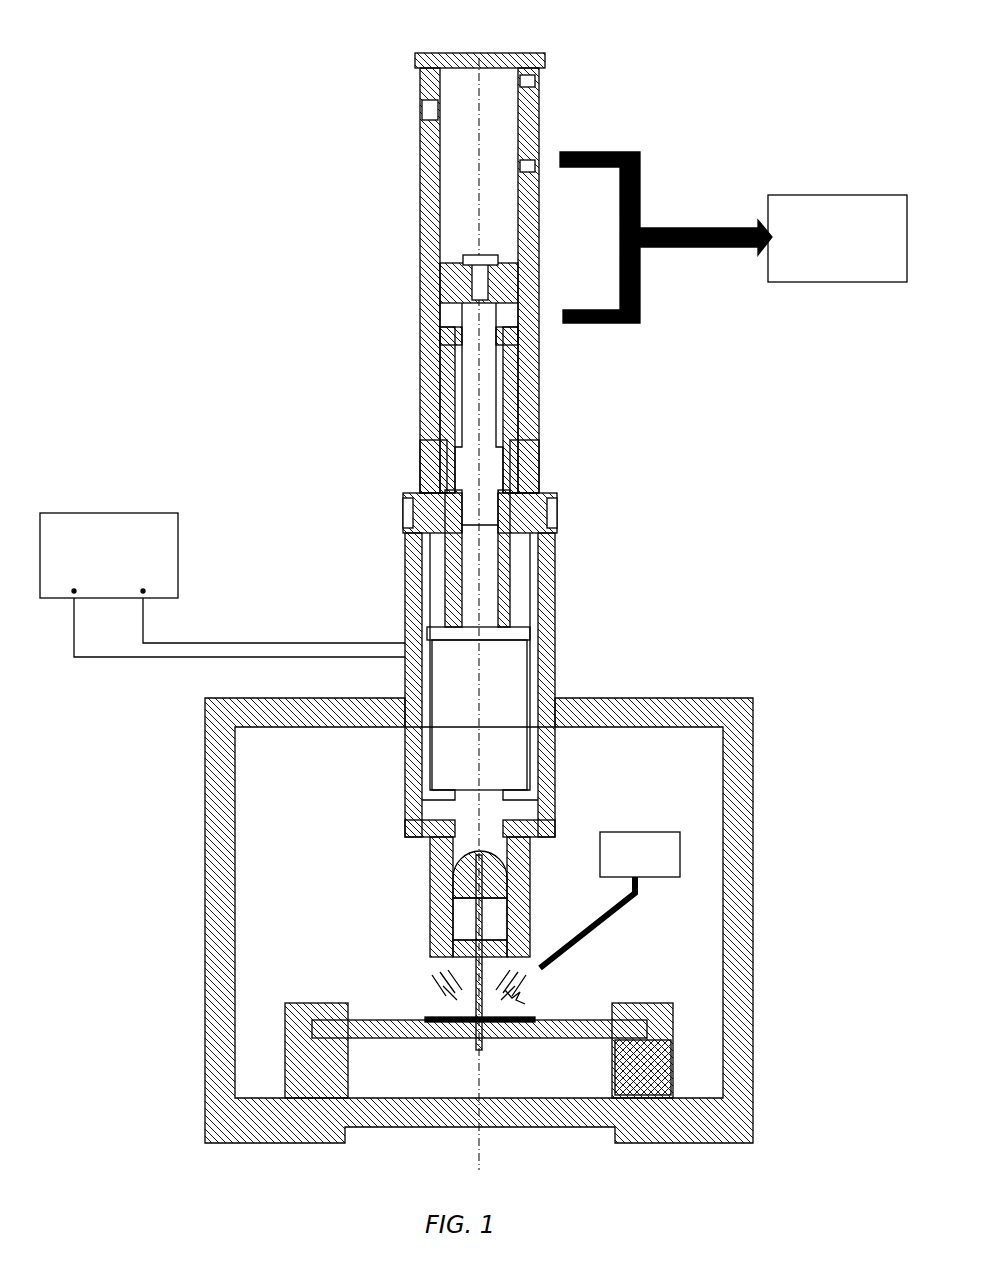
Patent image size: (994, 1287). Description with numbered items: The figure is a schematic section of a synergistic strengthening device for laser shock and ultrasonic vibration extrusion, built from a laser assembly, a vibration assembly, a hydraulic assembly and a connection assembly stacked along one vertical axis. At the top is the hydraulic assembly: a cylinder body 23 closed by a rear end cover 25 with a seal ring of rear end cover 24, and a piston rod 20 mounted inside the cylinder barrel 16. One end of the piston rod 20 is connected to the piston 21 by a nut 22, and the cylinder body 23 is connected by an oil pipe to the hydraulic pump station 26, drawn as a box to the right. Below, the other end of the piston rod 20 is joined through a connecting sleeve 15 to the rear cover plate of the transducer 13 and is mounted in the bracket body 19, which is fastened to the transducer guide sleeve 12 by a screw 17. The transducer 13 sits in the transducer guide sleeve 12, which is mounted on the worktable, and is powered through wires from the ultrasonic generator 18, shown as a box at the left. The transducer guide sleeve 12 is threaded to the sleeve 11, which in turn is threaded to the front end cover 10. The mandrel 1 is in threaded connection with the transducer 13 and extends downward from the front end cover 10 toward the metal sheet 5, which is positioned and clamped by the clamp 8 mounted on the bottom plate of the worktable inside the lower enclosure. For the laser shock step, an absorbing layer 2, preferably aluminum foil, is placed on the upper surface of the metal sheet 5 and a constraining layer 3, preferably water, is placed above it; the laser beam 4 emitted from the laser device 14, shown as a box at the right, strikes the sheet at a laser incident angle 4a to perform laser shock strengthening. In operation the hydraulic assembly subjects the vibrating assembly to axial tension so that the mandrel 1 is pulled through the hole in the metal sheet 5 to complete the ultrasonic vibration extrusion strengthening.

The mandrel 1 is at (432, 1017).
The absorbing layer 2 is at (417, 1017).
The constraining layer 3 is at (352, 1005).
The laser beam 4 is at (535, 992).
The laser incident angle 4a is at (540, 997).
The metal sheet 5 is at (590, 1115).
The clamp 8 is at (625, 1058).
The front end cover 10 is at (476, 1000).
The sleeve 11 is at (462, 960).
The transducer guide sleeve 12 is at (435, 828).
The transducer 13 is at (465, 792).
The laser device 14 is at (650, 837).
The connecting sleeve 15 is at (455, 600).
The cylinder barrel 16 is at (450, 540).
The screw 17 is at (435, 505).
The ultrasonic generator 18 is at (102, 530).
The bracket body 19 is at (432, 470).
The piston rod 20 is at (468, 397).
The piston 21 is at (462, 300).
The nut 22 is at (445, 272).
The cylinder body 23 is at (425, 165).
The seal ring of rear end cover 24 is at (422, 110).
The rear end cover 25 is at (418, 55).
The hydraulic pump station 26 is at (822, 267).